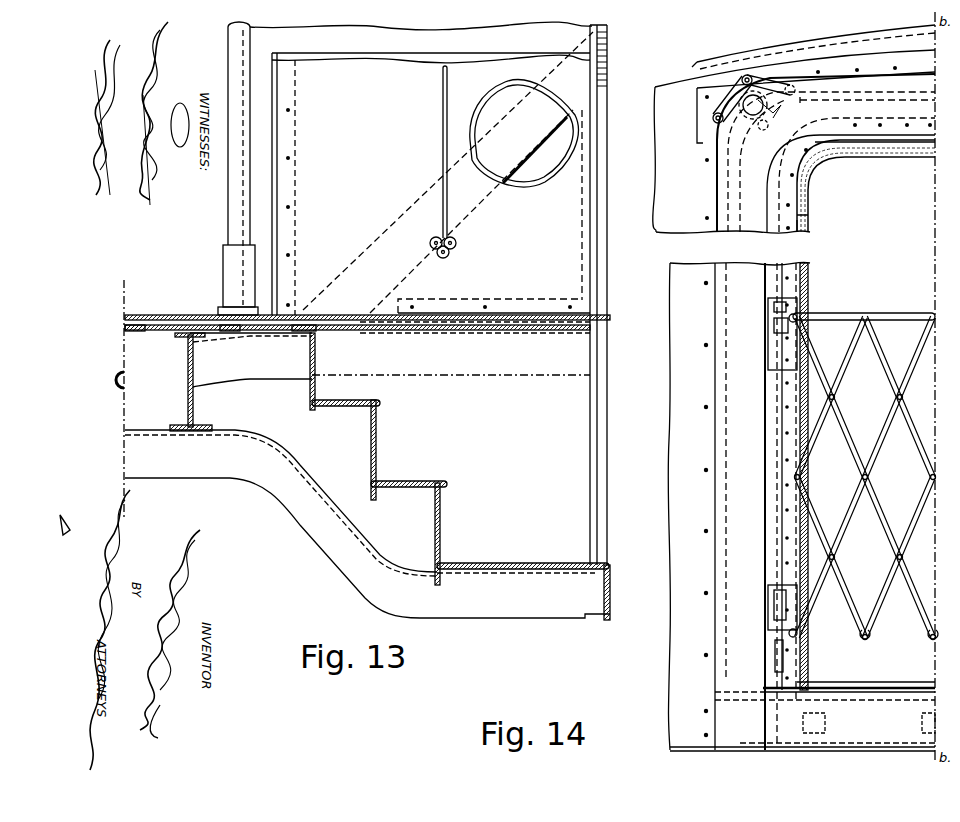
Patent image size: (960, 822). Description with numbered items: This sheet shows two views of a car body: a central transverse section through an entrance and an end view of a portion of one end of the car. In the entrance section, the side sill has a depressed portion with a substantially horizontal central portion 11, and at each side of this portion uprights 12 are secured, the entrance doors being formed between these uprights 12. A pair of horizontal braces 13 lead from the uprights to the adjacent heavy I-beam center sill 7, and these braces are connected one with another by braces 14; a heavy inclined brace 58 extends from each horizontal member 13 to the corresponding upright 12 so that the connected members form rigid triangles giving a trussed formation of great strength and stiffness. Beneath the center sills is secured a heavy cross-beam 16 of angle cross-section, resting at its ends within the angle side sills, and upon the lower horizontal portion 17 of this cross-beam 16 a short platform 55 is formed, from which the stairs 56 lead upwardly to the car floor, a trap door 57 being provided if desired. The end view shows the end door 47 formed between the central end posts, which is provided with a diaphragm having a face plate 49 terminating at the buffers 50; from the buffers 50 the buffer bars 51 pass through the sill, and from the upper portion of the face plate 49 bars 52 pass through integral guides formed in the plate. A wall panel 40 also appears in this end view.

In FIG. 13, the center sill 7 is at (188, 402).
In FIG. 13, the horizontal central portion 11 is at (610, 600).
In FIG. 13, the upright 12 is at (590, 403).
In FIG. 13, the horizontal brace 13 is at (252, 371).
In FIG. 13, the brace 14 is at (318, 332).
In FIG. 13, the cross-beam 16 is at (367, 524).
In FIG. 13, the horizontal portion 17 is at (522, 572).
In FIG. 14, the side wall panel 40 is at (739, 506).
In FIG. 14, the end door 47 is at (808, 293).
In FIG. 14, the face plate 49 is at (794, 129).
In FIG. 14, the buffer 50 is at (804, 532).
In FIG. 14, the buffer bar 51 is at (824, 720).
In FIG. 14, the bar 52 is at (754, 102).
In FIG. 13, the platform 55 is at (553, 563).
In FIG. 13, the stairs 56 is at (342, 400).
In FIG. 13, the trap door 57 is at (405, 168).
In FIG. 13, the inclined brace 58 is at (540, 146).